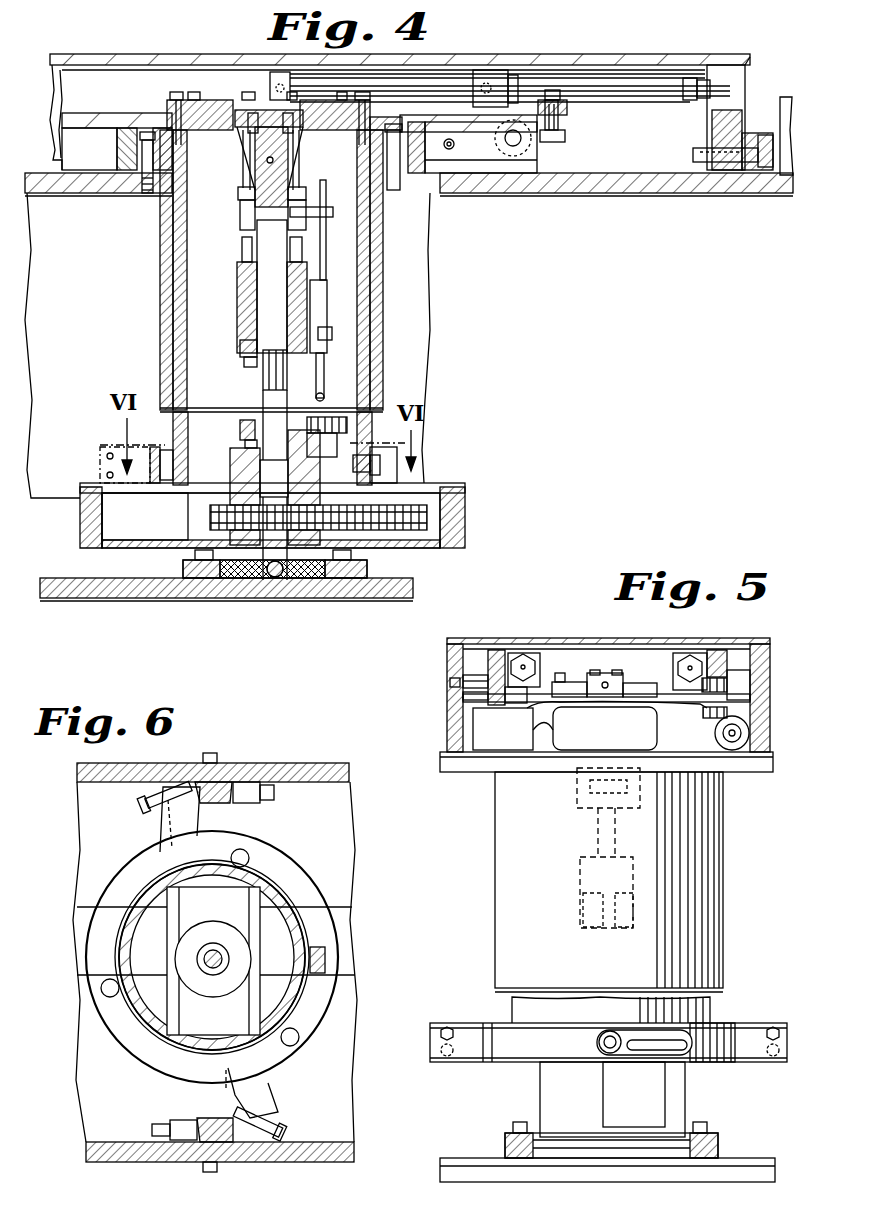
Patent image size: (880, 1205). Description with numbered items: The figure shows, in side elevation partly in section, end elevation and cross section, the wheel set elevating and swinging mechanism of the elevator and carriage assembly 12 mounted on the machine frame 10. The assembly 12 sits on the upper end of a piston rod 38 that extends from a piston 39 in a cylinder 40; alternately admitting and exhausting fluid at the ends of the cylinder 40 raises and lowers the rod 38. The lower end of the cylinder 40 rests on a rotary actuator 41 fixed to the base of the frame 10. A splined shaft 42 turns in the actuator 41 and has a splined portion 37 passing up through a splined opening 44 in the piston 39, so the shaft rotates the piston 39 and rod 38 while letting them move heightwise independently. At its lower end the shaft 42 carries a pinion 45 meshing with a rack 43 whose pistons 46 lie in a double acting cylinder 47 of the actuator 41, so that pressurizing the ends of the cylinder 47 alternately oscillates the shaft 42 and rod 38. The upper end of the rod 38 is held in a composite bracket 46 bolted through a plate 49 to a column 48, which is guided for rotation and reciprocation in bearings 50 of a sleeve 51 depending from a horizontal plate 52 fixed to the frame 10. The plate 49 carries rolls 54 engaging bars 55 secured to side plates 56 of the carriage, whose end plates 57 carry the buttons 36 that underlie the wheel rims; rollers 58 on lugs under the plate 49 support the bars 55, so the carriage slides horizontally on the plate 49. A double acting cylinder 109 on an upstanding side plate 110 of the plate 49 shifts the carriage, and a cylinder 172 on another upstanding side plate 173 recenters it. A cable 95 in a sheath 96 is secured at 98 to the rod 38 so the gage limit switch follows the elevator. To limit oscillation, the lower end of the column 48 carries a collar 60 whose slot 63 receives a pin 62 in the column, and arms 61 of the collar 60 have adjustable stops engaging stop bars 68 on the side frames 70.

In FIG. 4, the frame 10 is at (122, 600).
In FIG. 5, the frame 10 is at (740, 1158).
In FIG. 4, the elevator and carriage assembly 12 is at (608, 57).
In FIG. 4, the buttons 36 is at (758, 140).
In FIG. 5, the buttons 36 is at (752, 724).
In FIG. 4, the splined portion 37 is at (262, 305).
In FIG. 4, the piston rod 38 is at (262, 195).
In FIG. 4, the piston 39 is at (253, 430).
In FIG. 4, the cylinder 40 is at (242, 358).
In FIG. 4, the rotary actuator 41 is at (312, 434).
In FIG. 4, the splined shaft 42 is at (265, 478).
In FIG. 4, the rack 43 is at (355, 530).
In FIG. 4, the splined opening 44 is at (263, 393).
In FIG. 4, the pinion 45 is at (286, 580).
In FIG. 4, the composite bracket 46 is at (218, 100).
In FIG. 4, the double acting cylinder 47 is at (103, 550).
In FIG. 4, the column 48 is at (375, 400).
In FIG. 5, the column 48 is at (713, 1003).
In FIG. 6, the column 48 is at (303, 1005).
In FIG. 4, the plate 49 is at (468, 121).
In FIG. 4, the bearings 50 is at (180, 175).
In FIG. 4, the sleeve 51 is at (162, 285).
In FIG. 5, the sleeve 51 is at (722, 887).
In FIG. 4, the horizontal plate 52 is at (105, 197).
In FIG. 5, the horizontal plate 52 is at (750, 770).
In FIG. 4, the rolls 54 is at (545, 106).
In FIG. 5, the rolls 54 is at (707, 694).
In FIG. 4, the bars 55 is at (650, 102).
In FIG. 5, the bars 55 is at (737, 690).
In FIG. 5, the side plates 56 is at (452, 660).
In FIG. 4, the end plates 57 is at (730, 80).
In FIG. 4, the rollers 58 is at (558, 140).
In FIG. 4, the collar 60 is at (428, 482).
In FIG. 5, the collar 60 is at (747, 1023).
In FIG. 6, the collar 60 is at (122, 1040).
In FIG. 6, the arms 61 is at (163, 823).
In FIG. 5, the pin 62 is at (612, 1048).
In FIG. 6, the pin 62 is at (325, 957).
In FIG. 5, the slot 63 is at (693, 1045).
In FIG. 6, the slot 63 is at (323, 932).
In FIG. 6, the stop bars 68 is at (233, 803).
In FIG. 6, the side frames 70 is at (327, 1142).
In FIG. 4, the cable 95 is at (326, 195).
In FIG. 4, the sheath 96 is at (328, 393).
In FIG. 4, the cable securing point 98 is at (335, 215).
In FIG. 5, the double acting cylinder 109 is at (523, 655).
In FIG. 5, the upstanding side plate 110 is at (498, 655).
In FIG. 5, the cylinder 172 is at (683, 655).
In FIG. 5, the upstanding side plate 173 is at (711, 652).